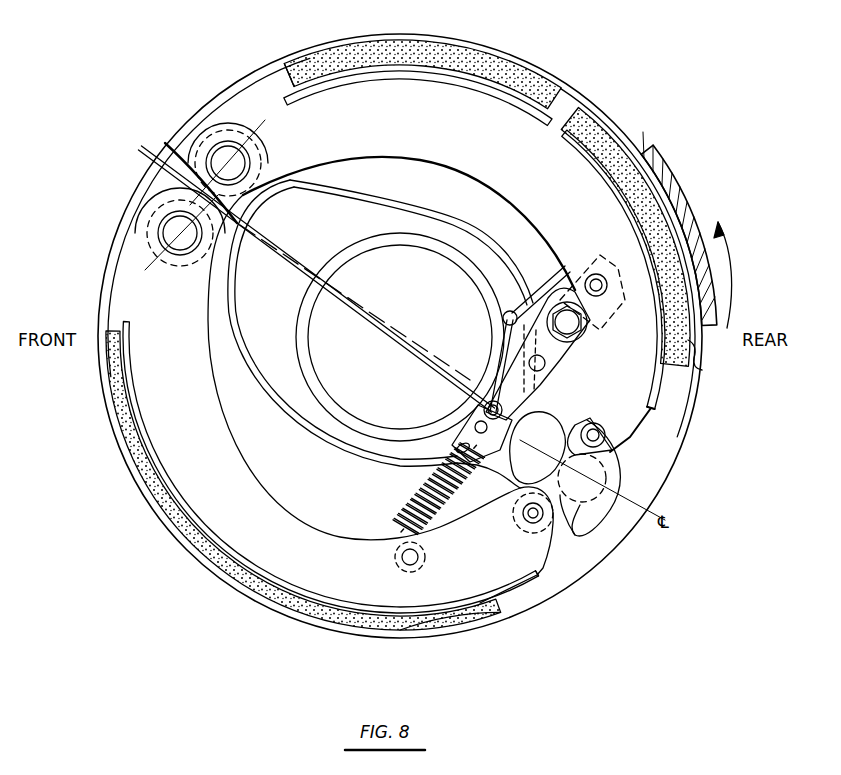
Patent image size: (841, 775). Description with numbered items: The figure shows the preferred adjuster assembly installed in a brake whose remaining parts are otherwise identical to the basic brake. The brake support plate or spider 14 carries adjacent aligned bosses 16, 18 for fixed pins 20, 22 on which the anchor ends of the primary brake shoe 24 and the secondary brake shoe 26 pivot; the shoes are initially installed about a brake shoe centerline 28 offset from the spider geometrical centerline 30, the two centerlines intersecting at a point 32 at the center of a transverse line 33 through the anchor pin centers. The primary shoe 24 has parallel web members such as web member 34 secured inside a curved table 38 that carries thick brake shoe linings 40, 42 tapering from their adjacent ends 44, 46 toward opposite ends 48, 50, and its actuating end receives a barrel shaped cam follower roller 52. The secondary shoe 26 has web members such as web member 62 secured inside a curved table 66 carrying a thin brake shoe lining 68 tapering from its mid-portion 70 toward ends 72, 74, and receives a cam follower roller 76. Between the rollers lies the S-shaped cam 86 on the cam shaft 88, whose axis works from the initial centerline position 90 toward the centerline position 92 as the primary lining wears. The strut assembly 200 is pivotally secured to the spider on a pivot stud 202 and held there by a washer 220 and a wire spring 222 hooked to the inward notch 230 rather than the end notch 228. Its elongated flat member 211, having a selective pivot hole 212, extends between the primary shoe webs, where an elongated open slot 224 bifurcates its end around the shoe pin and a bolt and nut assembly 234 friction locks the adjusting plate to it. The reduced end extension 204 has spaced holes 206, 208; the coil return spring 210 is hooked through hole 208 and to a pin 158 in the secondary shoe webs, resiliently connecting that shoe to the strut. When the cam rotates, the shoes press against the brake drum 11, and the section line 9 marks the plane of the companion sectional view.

The section line 9 is at (720, 176).
The brake drum 11 is at (688, 205).
The brake support plate or spider 14 is at (388, 236).
The boss 16 is at (250, 134).
The boss 18 is at (155, 265).
The fixed pin 20 is at (238, 158).
The fixed pin 22 is at (186, 268).
The primary brake shoe 24 is at (490, 160).
The secondary brake shoe 26 is at (270, 490).
The brake shoe centerline 28 is at (386, 344).
The spider geometrical centerline 30 is at (398, 344).
The intersection point 32 is at (174, 148).
The transverse line 33 is at (208, 104).
The web member 34 is at (418, 152).
The curved table 38 is at (662, 398).
The brake shoe lining 40 is at (490, 80).
The brake shoe lining 42 is at (580, 145).
The lining end 44 is at (500, 58).
The lining end 46 is at (593, 118).
The lining end 48 is at (346, 50).
The lining end 50 is at (708, 355).
The cam follower roller 52 is at (610, 440).
The web member 62 is at (234, 440).
The curved table 66 is at (530, 600).
The brake shoe lining 68 is at (418, 636).
The lining mid-portion 70 is at (216, 574).
The lining end 72 is at (106, 348).
The lining end 74 is at (468, 628).
The cam follower roller 76 is at (548, 530).
The S-shaped cam 86 is at (610, 492).
The cam shaft 88 is at (582, 530).
The centerline position 90 is at (536, 448).
The centerline position 92 is at (573, 478).
The pin 158 is at (426, 558).
The strut assembly 200 is at (575, 362).
The pivot stud 202 is at (505, 410).
The end extension 204 is at (462, 432).
The hole 206 is at (476, 424).
The hole 208 is at (455, 447).
The coil return spring 210 is at (408, 505).
The elongated flat member 211 is at (546, 378).
The hole 212 is at (546, 366).
The washer 220 is at (490, 380).
The spring 222 is at (556, 282).
The elongated open slot 224 is at (616, 216).
The notch 228 is at (596, 236).
The notch 230 is at (563, 268).
The bolt and nut assembly 234 is at (586, 323).